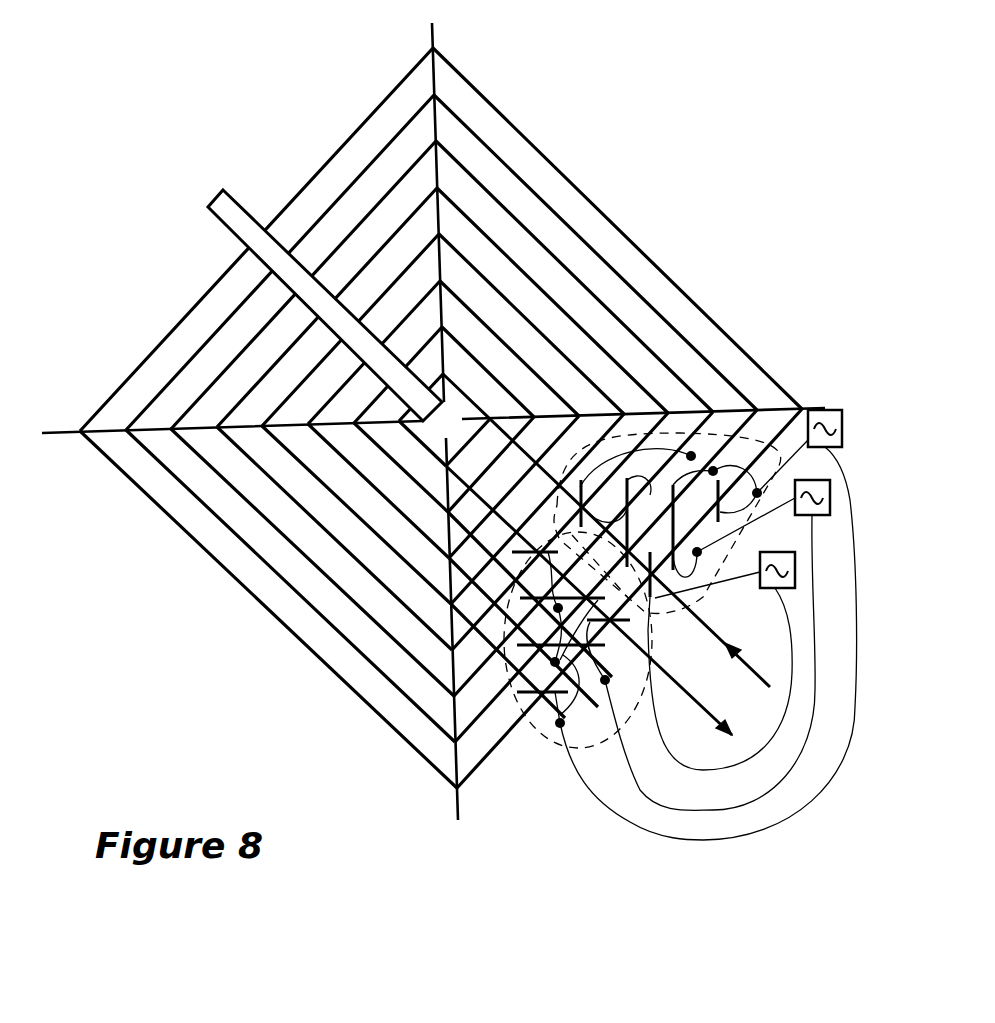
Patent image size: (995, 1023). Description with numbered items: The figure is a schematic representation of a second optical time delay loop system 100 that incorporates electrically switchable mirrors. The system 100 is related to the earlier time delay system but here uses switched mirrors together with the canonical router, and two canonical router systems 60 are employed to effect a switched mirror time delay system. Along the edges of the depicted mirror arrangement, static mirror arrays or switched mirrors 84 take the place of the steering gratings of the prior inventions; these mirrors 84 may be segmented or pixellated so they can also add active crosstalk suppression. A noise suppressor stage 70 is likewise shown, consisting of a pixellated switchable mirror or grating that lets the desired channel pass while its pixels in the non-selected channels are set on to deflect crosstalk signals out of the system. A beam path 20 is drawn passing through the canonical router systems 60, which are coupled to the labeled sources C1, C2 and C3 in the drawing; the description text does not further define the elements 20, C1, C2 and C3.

The optical time delay loop system 100 is at (238, 625).
The static mirror arrays or switched mirrors 84 is at (455, 808).
The noise suppressor stage 70 is at (241, 200).
The beam 20 is at (760, 673).
The canonical router system 60 is at (522, 800).
The source C1 is at (777, 557).
The source C2 is at (823, 511).
The source C3 is at (842, 428).